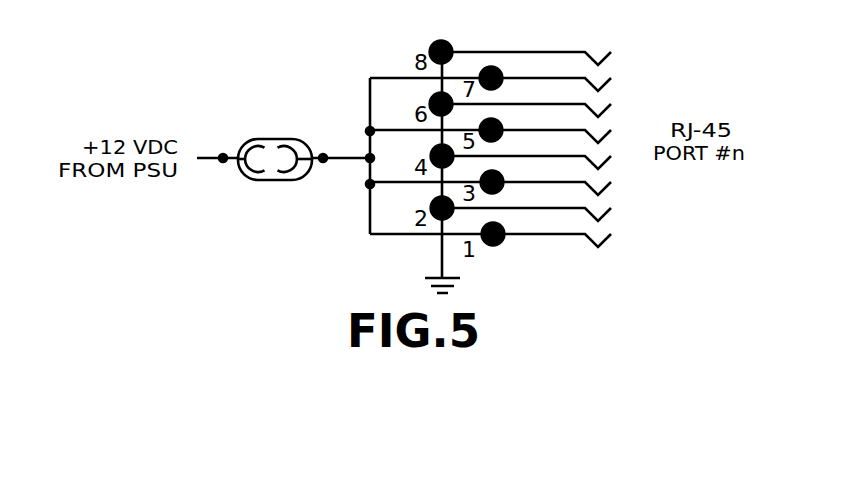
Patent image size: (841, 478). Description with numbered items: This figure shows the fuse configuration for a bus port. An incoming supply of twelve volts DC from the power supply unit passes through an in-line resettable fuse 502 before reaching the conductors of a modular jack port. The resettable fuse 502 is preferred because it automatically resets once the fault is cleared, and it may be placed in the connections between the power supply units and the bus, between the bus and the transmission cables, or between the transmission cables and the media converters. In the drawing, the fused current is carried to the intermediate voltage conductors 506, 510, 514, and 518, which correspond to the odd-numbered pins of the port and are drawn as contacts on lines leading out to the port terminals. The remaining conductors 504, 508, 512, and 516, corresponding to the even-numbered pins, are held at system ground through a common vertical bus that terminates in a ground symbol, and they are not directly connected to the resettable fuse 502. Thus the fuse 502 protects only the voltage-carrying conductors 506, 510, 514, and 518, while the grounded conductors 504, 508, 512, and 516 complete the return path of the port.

The in-line resettable fuse 502 is at (282, 181).
The conductor 504 is at (442, 38).
The intermediate voltage conductor 506 is at (492, 66).
The conductor 508 is at (430, 101).
The intermediate voltage conductor 510 is at (503, 120).
The conductor 512 is at (432, 153).
The intermediate voltage conductor 514 is at (503, 173).
The conductor 516 is at (434, 204).
The intermediate voltage conductor 518 is at (497, 245).